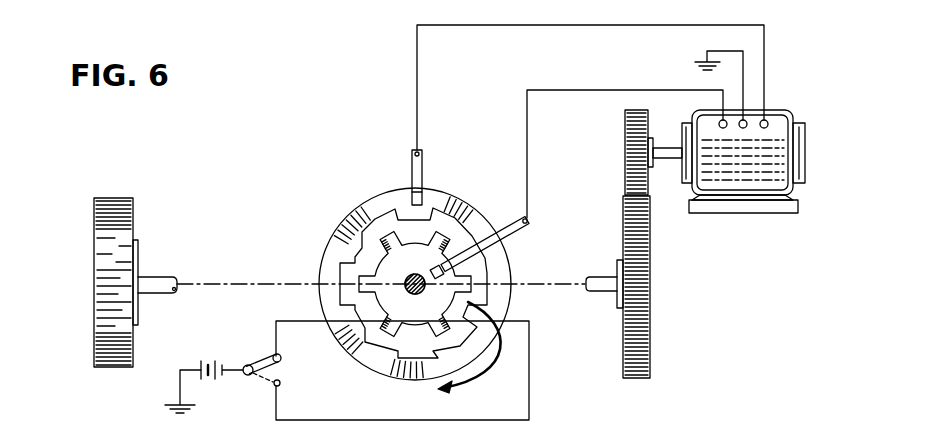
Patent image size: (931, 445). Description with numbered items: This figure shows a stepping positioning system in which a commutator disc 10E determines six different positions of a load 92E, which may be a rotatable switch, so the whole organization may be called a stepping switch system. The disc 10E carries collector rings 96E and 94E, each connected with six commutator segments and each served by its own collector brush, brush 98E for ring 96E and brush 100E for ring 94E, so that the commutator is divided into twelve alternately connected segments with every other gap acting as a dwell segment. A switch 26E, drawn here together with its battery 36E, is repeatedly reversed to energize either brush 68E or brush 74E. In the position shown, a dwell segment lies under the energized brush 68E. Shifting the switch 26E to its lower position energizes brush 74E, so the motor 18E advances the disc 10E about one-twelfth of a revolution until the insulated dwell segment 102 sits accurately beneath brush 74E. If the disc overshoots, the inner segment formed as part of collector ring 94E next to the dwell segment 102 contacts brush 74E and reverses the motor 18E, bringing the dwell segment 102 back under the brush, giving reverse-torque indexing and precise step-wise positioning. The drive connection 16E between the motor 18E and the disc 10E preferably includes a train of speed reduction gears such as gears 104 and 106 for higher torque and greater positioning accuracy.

The load 92E is at (100, 243).
The collector ring 94E is at (393, 268).
The collector ring 96E is at (367, 208).
The collector brush 98E is at (421, 171).
The collector brush 100E is at (512, 224).
The commutator disc 10E is at (435, 284).
The insulated dwell segment 102 is at (478, 293).
The brush 68E is at (382, 331).
The brush 74E is at (473, 331).
The switch 26E is at (261, 357).
The battery 36E is at (222, 380).
The speed reduction gear 104 is at (628, 148).
The drive connection 16E is at (670, 158).
The speed reduction gear 106 is at (648, 308).
The motor 18E is at (752, 173).